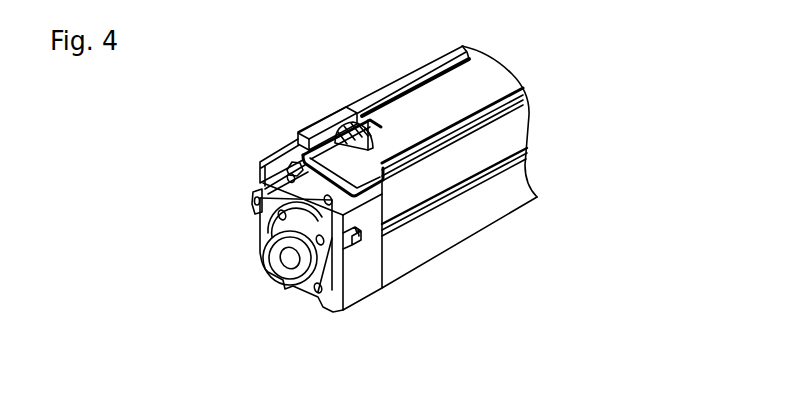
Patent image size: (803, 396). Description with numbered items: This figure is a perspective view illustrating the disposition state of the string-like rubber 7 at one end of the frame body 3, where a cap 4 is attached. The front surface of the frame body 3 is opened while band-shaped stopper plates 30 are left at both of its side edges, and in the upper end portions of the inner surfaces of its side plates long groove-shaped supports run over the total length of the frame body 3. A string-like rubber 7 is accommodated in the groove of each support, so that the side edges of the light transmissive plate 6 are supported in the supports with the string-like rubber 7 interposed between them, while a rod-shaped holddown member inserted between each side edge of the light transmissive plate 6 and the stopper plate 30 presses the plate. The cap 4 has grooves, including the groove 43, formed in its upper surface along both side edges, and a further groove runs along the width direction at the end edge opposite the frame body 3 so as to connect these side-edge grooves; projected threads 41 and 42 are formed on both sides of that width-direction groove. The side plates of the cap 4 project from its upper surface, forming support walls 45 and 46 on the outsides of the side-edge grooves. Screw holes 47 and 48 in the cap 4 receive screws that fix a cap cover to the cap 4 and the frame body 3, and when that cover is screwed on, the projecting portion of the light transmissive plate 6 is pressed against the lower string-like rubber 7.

The frame body 3 is at (478, 222).
The cap 4 is at (370, 280).
The light transmissive plate 6 is at (450, 87).
The string-like rubber 7 is at (324, 175).
The stopper plate 30 is at (413, 72).
The projected thread 41 is at (342, 135).
The projected thread 42 is at (304, 164).
The groove 43 is at (277, 160).
The support wall 45 is at (293, 158).
The support wall 46 is at (317, 294).
The screw hole 47 is at (256, 197).
The screw hole 48 is at (269, 259).